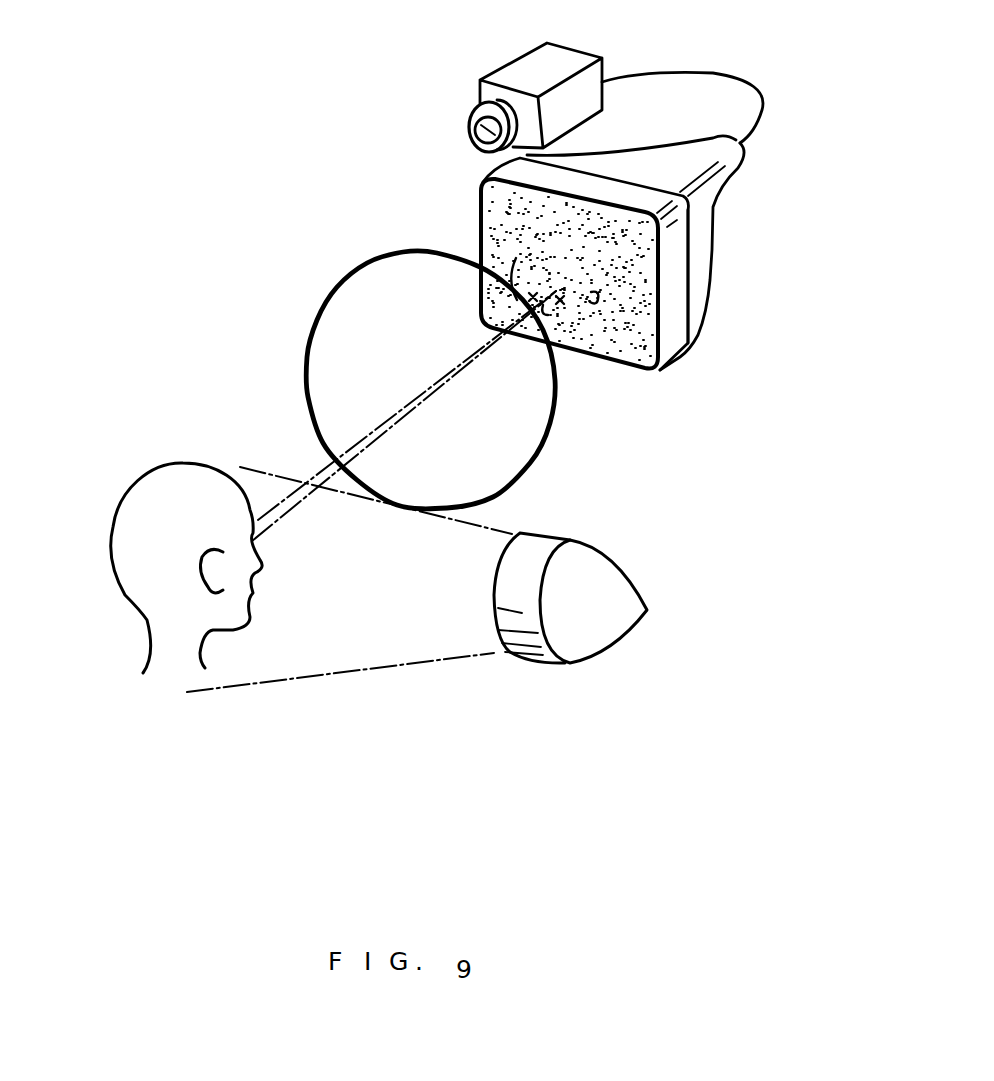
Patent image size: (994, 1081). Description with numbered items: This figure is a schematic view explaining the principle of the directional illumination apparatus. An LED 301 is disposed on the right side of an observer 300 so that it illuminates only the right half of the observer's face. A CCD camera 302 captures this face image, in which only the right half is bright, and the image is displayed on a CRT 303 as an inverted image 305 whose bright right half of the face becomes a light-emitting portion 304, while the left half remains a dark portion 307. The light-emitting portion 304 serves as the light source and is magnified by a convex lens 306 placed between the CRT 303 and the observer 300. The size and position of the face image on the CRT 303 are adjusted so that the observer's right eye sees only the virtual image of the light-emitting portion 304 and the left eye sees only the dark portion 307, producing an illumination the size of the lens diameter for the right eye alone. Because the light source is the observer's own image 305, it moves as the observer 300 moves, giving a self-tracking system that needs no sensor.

The observer 300 is at (160, 490).
The LED 301 is at (632, 578).
The CCD camera 302 is at (480, 98).
The CRT 303 is at (478, 210).
The light-emitting portion 304 is at (533, 273).
The inverted image 305 is at (610, 227).
The convex lens 306 is at (305, 318).
The dark portion 307 is at (583, 305).